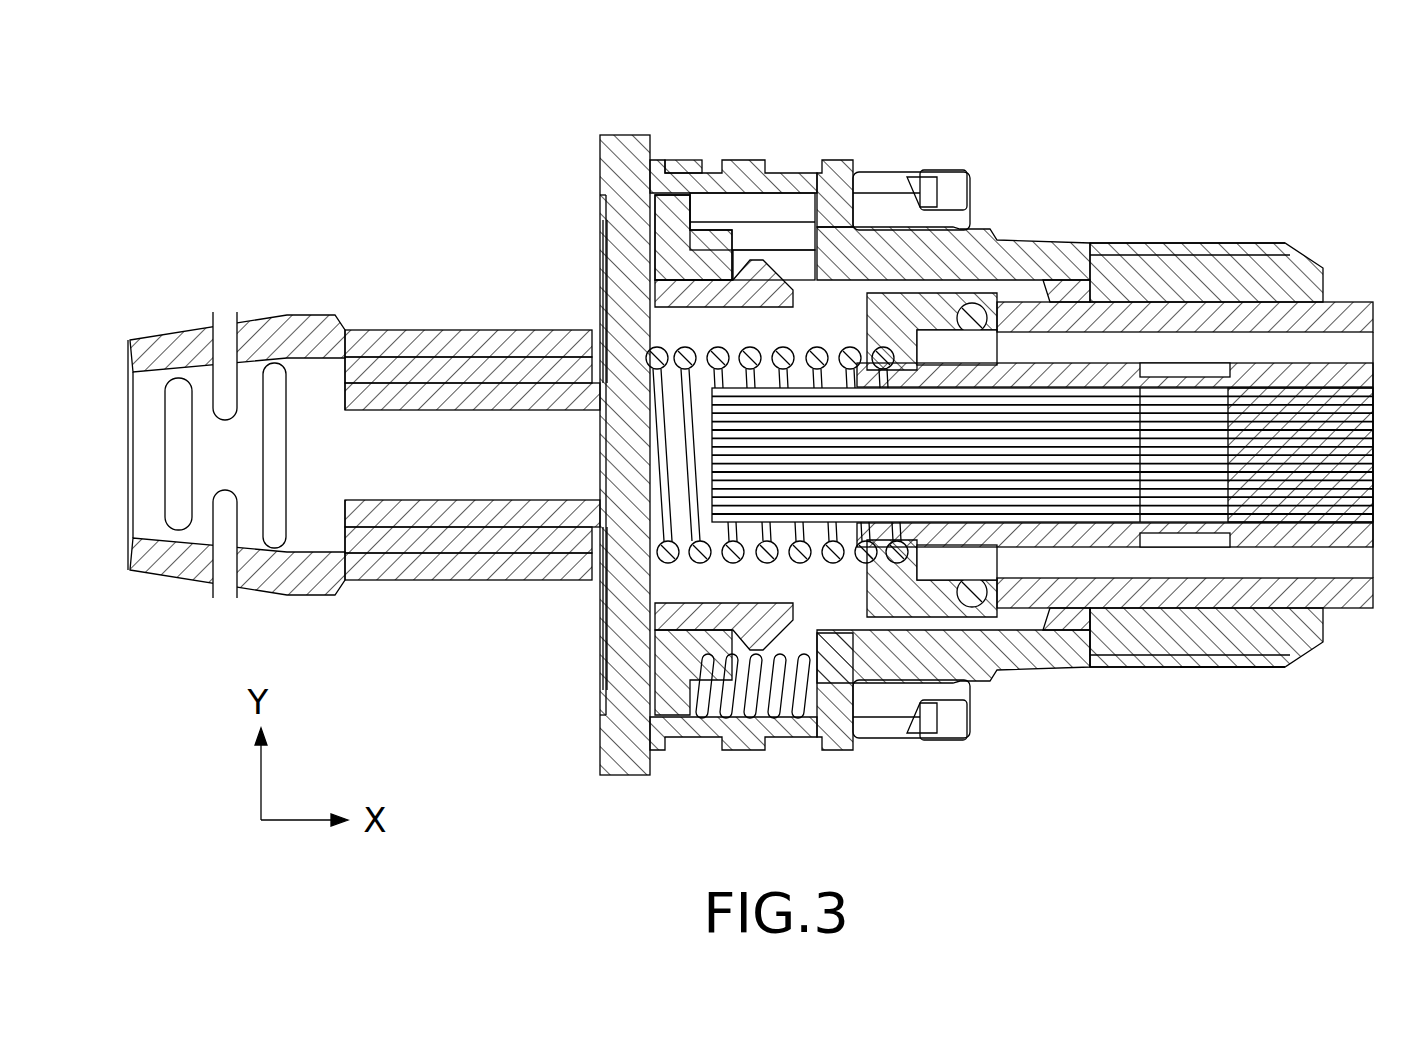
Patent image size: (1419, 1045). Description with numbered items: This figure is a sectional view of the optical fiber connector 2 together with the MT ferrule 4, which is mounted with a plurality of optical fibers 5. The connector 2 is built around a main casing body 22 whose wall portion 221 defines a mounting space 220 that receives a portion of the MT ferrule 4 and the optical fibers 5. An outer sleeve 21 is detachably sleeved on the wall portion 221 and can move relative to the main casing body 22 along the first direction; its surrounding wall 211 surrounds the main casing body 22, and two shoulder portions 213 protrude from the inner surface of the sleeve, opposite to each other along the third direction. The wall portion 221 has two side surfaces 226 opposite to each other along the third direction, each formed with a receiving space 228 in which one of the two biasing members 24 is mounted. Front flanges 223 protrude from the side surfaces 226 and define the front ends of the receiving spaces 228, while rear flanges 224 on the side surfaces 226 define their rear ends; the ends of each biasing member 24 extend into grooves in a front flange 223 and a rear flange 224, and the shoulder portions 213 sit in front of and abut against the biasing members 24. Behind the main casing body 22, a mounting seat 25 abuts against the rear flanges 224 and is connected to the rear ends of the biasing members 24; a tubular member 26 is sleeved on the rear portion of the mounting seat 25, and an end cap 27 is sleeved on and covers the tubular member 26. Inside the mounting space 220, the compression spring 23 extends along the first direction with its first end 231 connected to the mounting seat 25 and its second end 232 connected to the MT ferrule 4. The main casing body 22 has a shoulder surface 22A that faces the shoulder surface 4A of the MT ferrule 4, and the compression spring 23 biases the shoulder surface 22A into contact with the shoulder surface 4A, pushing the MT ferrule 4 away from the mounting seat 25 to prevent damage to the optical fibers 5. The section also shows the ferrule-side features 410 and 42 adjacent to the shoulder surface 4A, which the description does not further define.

The optical fiber connector 2 is at (396, 166).
The outer sleeve 21 is at (742, 118).
The surrounding wall 211 is at (690, 155).
The shoulder portions 213 is at (815, 170).
The main casing body 22 is at (1250, 208).
The shoulder surface 22A is at (1082, 668).
The mounting space 220 is at (864, 618).
The wall portion 221 is at (1233, 672).
The front flanges 223 is at (868, 185).
The rear flanges 224 is at (645, 215).
The side surfaces 226 is at (1175, 270).
The receiving space 228 is at (775, 226).
The compression spring 23 is at (693, 340).
The first end 231 is at (660, 356).
The second end 232 is at (945, 582).
The biasing members 24 is at (742, 705).
The mounting seat 25 is at (615, 250).
The tubular member 26 is at (453, 378).
The end cap 27 is at (412, 582).
The MT ferrule 4 is at (1352, 608).
The shoulder surface 4A is at (1035, 258).
The retaining ring 410 is at (1000, 300).
The ball 42 is at (972, 303).
The optical fibers 5 is at (712, 478).